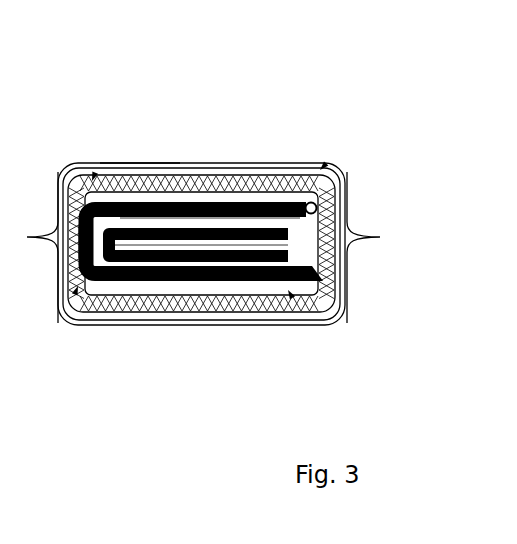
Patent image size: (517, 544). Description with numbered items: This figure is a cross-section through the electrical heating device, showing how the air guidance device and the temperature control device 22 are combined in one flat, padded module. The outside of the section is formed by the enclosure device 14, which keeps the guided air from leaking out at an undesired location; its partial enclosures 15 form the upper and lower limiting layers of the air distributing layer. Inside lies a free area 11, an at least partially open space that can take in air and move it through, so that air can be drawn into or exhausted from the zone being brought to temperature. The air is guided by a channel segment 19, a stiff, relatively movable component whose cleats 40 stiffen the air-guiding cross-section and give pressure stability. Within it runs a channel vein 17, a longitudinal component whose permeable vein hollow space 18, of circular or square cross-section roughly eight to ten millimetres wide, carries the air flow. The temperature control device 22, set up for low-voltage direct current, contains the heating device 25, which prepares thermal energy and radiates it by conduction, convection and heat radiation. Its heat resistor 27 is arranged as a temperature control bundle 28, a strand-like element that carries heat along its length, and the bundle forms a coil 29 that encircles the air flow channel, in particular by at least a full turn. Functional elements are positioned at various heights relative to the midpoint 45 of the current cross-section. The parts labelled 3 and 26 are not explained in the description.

The electrochemical cell 3 is at (190, 247).
The free area 11 is at (252, 190).
The enclosure device 14 is at (270, 320).
The partial enclosure 15 is at (310, 162).
The channel vein 17 is at (178, 236).
The vein hollow space 18 is at (160, 292).
The channel segment 19 is at (139, 156).
The temperature control device 22 is at (75, 293).
The heating device 25 is at (133, 232).
The seam 26 is at (293, 196).
The heat resistor 27 is at (147, 250).
The temperature control bundle 28 is at (83, 252).
The coil 29 is at (291, 295).
The cleat 40 is at (95, 174).
The midpoint 45 is at (171, 200).